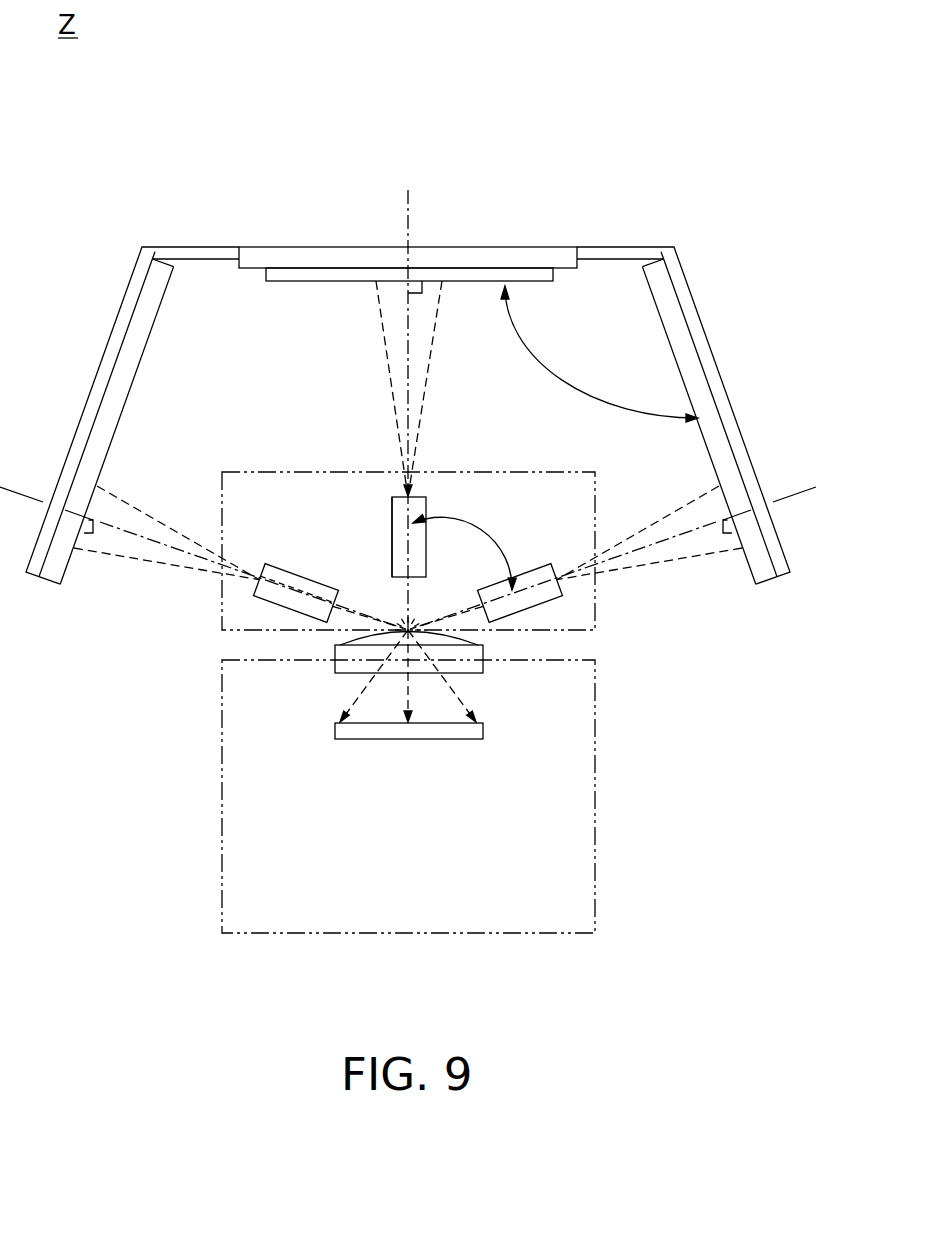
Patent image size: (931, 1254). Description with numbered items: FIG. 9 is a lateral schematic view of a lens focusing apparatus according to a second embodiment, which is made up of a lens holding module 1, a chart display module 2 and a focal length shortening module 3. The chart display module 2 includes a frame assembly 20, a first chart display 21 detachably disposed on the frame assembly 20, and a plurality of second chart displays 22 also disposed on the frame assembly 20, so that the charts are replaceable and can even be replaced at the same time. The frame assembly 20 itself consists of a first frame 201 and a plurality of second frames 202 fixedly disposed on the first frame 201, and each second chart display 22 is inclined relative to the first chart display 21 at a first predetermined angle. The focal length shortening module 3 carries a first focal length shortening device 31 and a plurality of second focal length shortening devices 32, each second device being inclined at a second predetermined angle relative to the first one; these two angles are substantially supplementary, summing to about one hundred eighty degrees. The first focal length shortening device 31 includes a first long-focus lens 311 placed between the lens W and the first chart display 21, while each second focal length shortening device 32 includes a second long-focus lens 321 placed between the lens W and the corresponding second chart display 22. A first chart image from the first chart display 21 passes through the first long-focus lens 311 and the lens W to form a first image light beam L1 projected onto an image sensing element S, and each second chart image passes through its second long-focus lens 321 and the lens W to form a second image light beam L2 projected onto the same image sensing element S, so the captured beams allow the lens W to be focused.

The lens holding module 1 is at (607, 811).
The chart display module 2 is at (408, 352).
The frame assembly 20 is at (408, 349).
The first frame 201 is at (399, 217).
The second frame 202 is at (137, 262).
The first chart display 21 is at (338, 276).
The second chart display 22 is at (112, 415).
The focal length shortening module 3 is at (365, 502).
The first focal length shortening device 31 is at (371, 493).
The first long-focus lens 311 is at (400, 551).
The second focal length shortening device 32 is at (365, 523).
The second long-focus lens 321 is at (282, 602).
The lens W is at (503, 677).
The image sensing element S is at (503, 728).
The first image light beam L1 is at (407, 688).
The second image light beam L2 is at (350, 698).